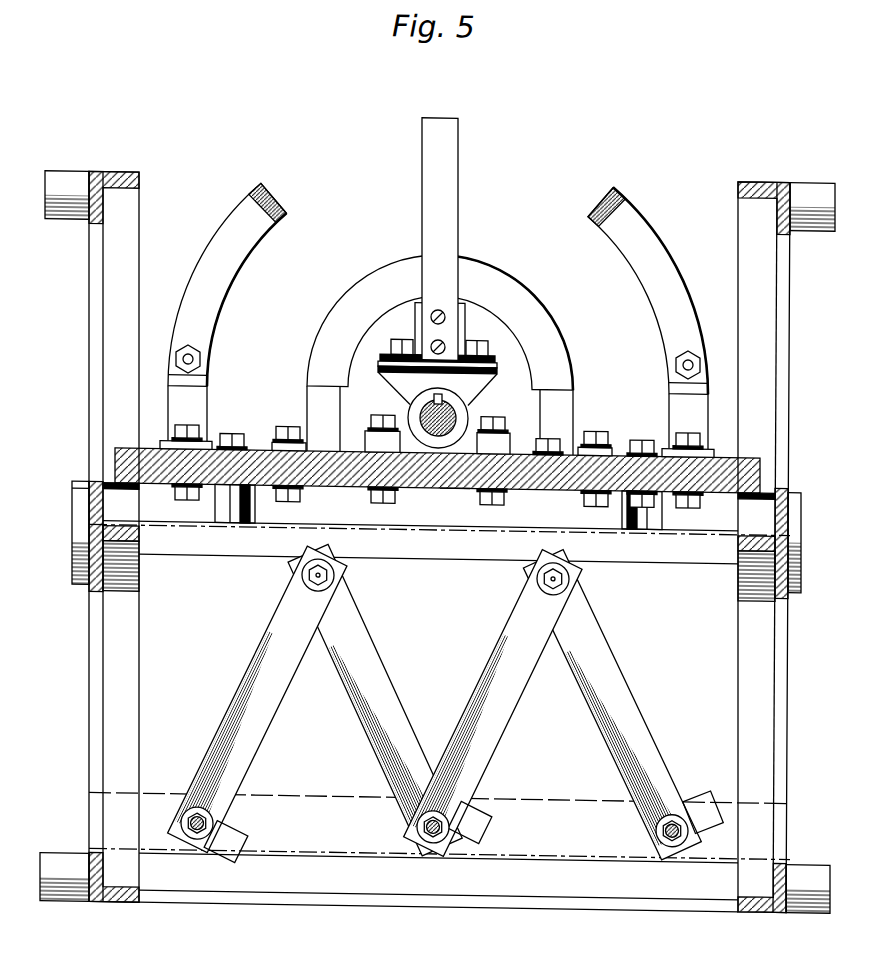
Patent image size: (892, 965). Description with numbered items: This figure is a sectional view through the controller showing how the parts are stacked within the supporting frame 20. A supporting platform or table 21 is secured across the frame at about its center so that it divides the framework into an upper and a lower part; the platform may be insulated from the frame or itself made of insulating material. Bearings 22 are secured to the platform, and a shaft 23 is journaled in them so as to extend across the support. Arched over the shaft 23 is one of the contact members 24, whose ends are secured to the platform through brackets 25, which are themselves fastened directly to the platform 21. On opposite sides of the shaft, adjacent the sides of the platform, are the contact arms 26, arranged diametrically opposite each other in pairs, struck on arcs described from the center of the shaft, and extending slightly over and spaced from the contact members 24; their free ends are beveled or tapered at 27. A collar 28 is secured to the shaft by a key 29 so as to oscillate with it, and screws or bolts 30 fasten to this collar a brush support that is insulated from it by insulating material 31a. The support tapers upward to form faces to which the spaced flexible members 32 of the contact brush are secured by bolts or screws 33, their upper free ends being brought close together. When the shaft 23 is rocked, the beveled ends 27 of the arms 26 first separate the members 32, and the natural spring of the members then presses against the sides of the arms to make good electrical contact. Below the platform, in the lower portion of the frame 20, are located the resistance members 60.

The supporting frame 20 is at (785, 403).
The supporting platform or table 21 is at (760, 458).
The bearings 22 is at (485, 430).
The shaft 23 is at (405, 410).
The contact members 24 is at (360, 285).
The brackets 25 is at (312, 403).
The contact arms 26 is at (231, 252).
The beveled or tapered free ends 27 is at (282, 207).
The collars 28 is at (430, 410).
The keys 29 is at (458, 450).
The screws or bolts 30 is at (413, 334).
The insulating material 31a is at (493, 356).
The flexible members 32 is at (445, 180).
The bolts or screws 33 is at (439, 304).
The resistance members 60 is at (393, 743).